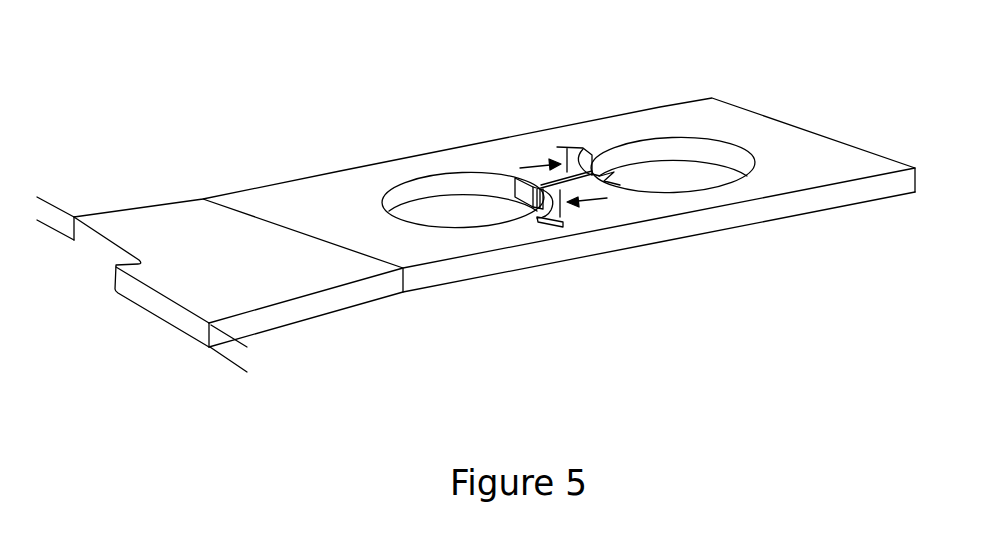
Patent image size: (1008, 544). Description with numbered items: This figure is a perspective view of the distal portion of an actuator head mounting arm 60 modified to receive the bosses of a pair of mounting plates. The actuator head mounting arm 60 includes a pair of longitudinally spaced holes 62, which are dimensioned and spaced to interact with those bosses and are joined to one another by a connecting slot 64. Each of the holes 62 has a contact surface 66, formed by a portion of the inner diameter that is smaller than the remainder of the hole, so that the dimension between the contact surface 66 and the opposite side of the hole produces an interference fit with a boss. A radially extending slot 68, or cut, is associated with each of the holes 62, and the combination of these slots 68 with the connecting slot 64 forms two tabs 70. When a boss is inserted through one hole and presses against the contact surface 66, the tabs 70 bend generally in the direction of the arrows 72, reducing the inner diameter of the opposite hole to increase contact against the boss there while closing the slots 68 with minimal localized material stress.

The actuator head mounting arm 60 is at (274, 90).
The holes 62 is at (462, 228).
The connecting slot 64 is at (593, 172).
The contact surfaces 66 is at (513, 183).
The radially extending slot 68 is at (573, 148).
The tabs 70 is at (577, 148).
The arrows 72 is at (538, 168).